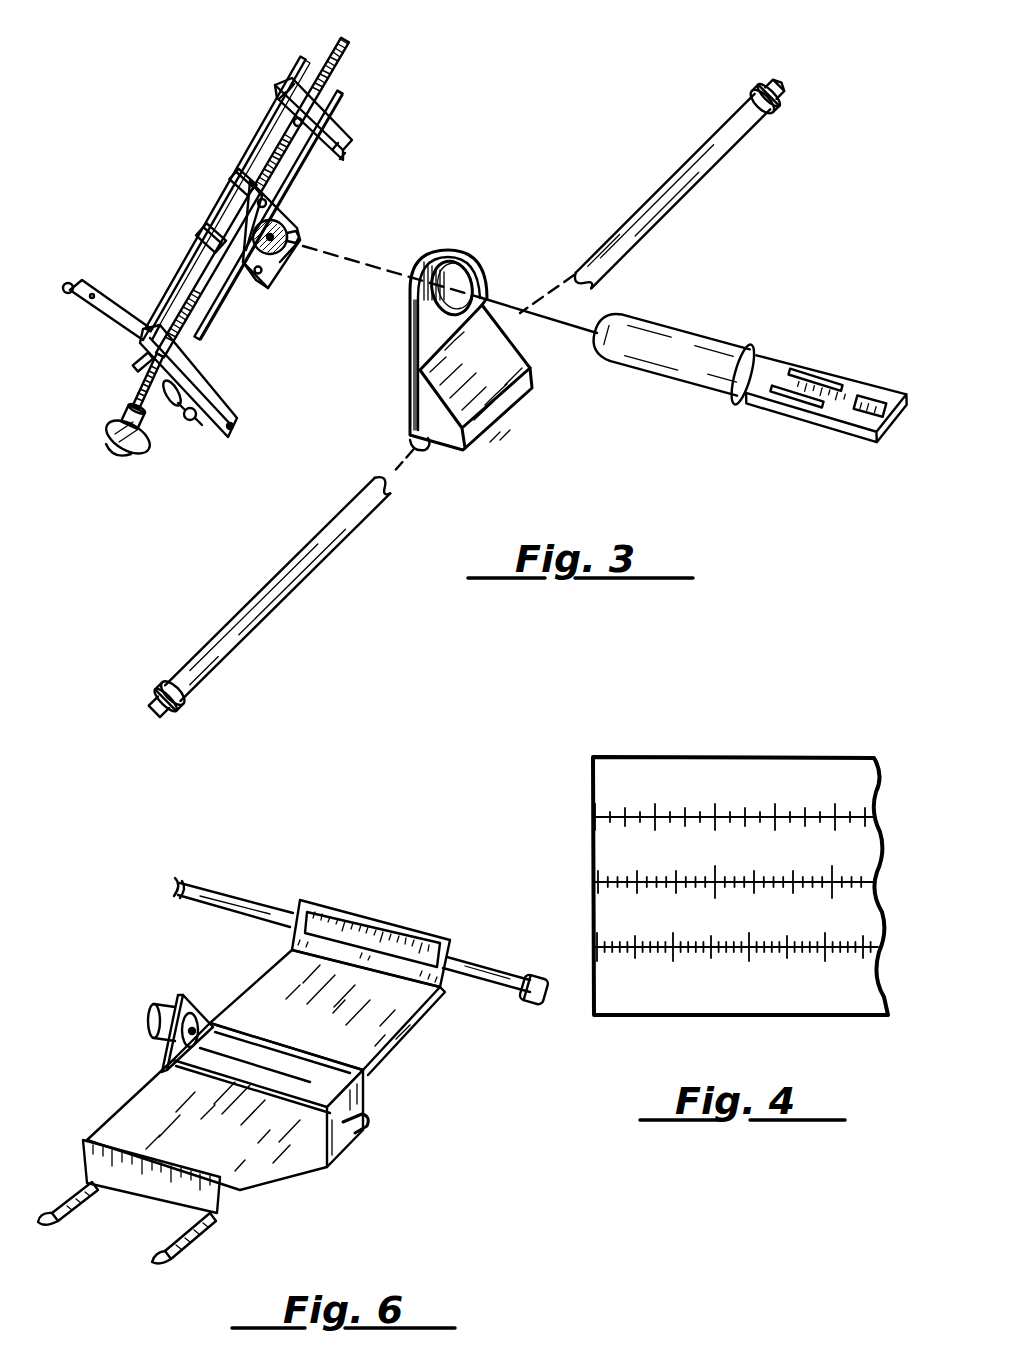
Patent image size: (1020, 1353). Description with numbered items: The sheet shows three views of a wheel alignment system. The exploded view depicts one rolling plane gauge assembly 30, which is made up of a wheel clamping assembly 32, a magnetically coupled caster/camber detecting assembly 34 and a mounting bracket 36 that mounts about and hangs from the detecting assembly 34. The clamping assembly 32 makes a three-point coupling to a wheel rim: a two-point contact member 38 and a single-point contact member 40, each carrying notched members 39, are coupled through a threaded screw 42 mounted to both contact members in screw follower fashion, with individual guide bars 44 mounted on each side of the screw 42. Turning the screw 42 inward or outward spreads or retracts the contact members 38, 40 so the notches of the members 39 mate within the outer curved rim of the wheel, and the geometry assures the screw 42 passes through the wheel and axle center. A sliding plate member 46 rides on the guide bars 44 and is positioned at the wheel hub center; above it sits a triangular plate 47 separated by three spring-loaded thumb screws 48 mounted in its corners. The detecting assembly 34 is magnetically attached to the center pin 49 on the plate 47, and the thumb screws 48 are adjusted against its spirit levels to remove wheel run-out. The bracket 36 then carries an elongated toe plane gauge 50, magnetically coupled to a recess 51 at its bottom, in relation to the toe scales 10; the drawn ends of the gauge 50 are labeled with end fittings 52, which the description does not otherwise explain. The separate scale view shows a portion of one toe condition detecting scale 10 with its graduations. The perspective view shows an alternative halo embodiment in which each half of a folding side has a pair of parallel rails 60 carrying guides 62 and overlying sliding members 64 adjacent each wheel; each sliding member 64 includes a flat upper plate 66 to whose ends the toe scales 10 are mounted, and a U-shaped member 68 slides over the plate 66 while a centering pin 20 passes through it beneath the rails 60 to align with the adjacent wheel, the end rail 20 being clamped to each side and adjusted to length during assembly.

In FIG. 4, the toe condition detecting scale 10 is at (753, 757).
In FIG. 6, the toe condition detecting scale 10 is at (377, 927).
In FIG. 6, the end rail 20 is at (232, 910).
In FIG. 3, the rolling plane gauge assembly 30 is at (518, 193).
In FIG. 3, the wheel clamping assembly 32 is at (212, 157).
In FIG. 3, the caster/camber detecting assembly 34 is at (842, 368).
In FIG. 3, the mounting bracket 36 is at (478, 390).
In FIG. 3, the two-point contact member 38 is at (218, 404).
In FIG. 3, the notched member 39 is at (297, 128).
In FIG. 3, the single-point contact member 40 is at (357, 127).
In FIG. 3, the threaded screw 42 is at (198, 322).
In FIG. 3, the guide bar 44 is at (207, 262).
In FIG. 3, the sliding plate member 46 is at (232, 182).
In FIG. 3, the triangular plate 47 is at (253, 212).
In FIG. 3, the spring-loaded thumb screw 48 is at (266, 202).
In FIG. 3, the center pin 49 is at (273, 237).
In FIG. 3, the toe plane gauge 50 is at (707, 147).
In FIG. 3, the recess 51 is at (442, 457).
In FIG. 3, the end cap 52 is at (780, 73).
In FIG. 6, the parallel rail 60 is at (163, 1250).
In FIG. 6, the guide 62 is at (187, 1223).
In FIG. 6, the sliding member 64 is at (407, 1033).
In FIG. 6, the flat upper plate 66 is at (223, 1130).
In FIG. 6, the U-shaped member 68 is at (345, 1140).